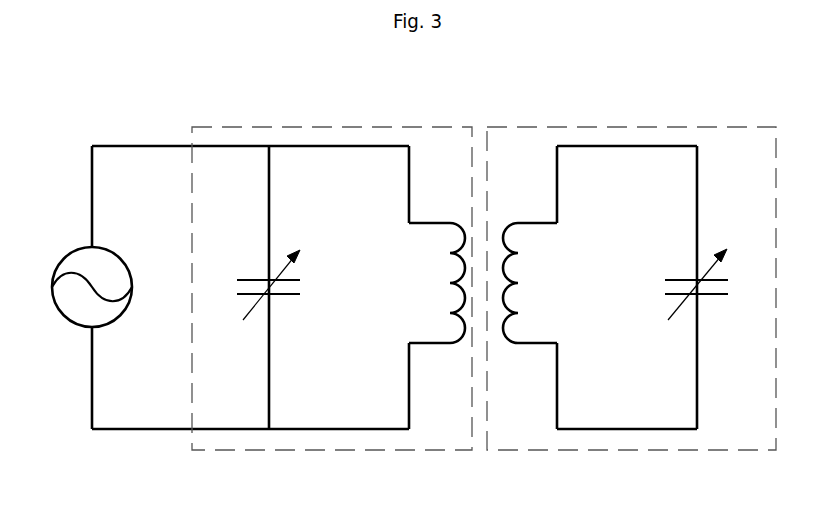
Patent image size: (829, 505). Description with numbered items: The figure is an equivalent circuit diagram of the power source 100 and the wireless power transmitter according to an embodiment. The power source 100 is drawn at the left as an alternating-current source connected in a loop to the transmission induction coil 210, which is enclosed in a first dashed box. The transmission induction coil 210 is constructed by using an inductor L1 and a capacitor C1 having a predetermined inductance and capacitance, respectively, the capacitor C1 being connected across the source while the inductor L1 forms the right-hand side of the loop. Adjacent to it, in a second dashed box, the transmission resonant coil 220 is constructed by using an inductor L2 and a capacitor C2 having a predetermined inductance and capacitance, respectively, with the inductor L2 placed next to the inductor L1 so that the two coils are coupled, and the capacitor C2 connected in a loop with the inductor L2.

The power source 100 is at (67, 254).
The transmission induction coil 210 is at (369, 127).
The transmission resonant coil 220 is at (565, 127).
The capacitor C1 is at (252, 287).
The inductor L1 is at (437, 283).
The inductor L2 is at (530, 283).
The capacitor C2 is at (715, 284).